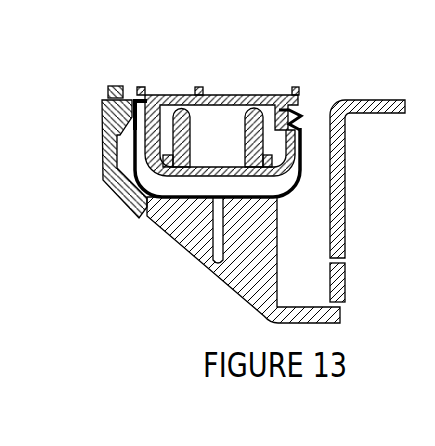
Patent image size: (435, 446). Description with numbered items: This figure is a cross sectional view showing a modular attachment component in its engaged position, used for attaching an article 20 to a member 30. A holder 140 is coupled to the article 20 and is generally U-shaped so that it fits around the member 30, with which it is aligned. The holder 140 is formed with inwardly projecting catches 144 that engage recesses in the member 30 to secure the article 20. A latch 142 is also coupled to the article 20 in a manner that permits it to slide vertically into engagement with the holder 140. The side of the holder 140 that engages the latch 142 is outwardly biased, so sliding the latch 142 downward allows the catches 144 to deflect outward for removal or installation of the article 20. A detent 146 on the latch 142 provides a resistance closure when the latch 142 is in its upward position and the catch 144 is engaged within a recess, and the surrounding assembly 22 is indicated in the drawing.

The article 20 is at (340, 311).
The channel assembly 22 is at (310, 194).
The member 30 is at (291, 108).
The holder 140 is at (246, 70).
The latch 142 is at (102, 177).
The catch 144 is at (310, 104).
The detent 146 is at (143, 100).